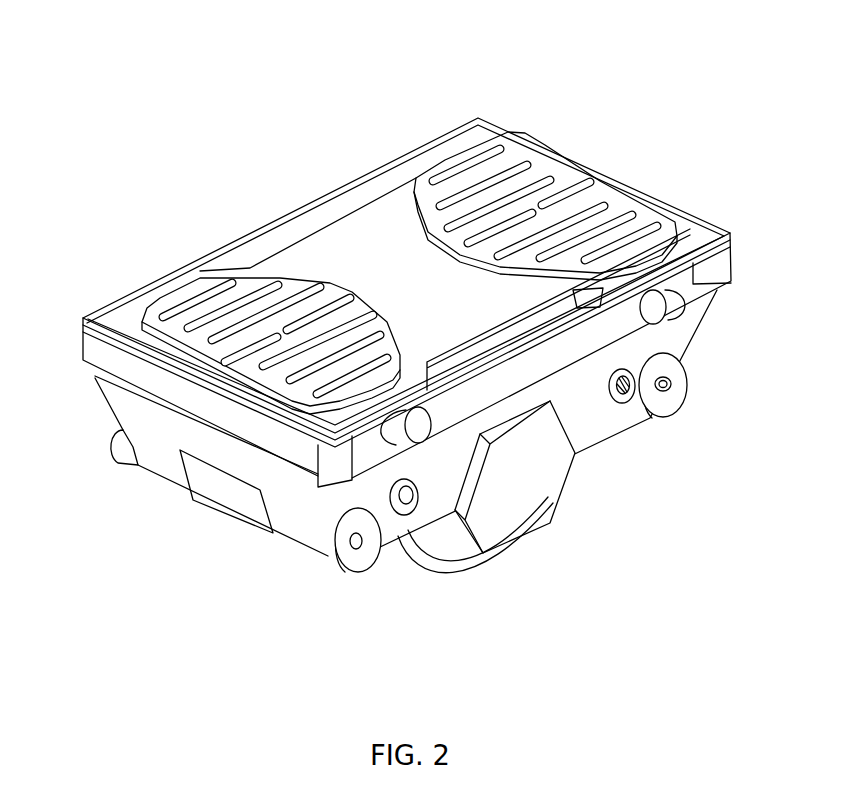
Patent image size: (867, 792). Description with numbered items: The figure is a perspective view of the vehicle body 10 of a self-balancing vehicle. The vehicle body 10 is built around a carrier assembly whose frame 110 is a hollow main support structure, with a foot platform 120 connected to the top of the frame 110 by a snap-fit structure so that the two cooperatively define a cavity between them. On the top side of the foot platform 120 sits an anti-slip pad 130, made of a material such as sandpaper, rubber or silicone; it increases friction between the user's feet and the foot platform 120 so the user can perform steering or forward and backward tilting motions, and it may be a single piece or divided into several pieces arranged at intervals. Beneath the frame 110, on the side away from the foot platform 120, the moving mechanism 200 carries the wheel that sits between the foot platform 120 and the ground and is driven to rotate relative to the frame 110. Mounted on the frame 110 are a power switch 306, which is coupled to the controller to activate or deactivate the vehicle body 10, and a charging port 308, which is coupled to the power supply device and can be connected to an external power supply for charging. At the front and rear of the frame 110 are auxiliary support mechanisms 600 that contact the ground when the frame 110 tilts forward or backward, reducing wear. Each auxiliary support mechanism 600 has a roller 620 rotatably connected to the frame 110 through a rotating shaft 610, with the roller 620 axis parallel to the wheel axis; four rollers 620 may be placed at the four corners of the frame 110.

The vehicle body 10 is at (132, 158).
The frame 110 is at (152, 450).
The foot platform 120 is at (380, 235).
The anti-slip pad 130 is at (565, 172).
The moving mechanism 200 is at (470, 578).
The power switch 306 is at (405, 515).
The charging port 308 is at (623, 404).
The auxiliary support mechanism 600 is at (340, 567).
The rotating shaft 610 is at (668, 387).
The roller 620 is at (672, 410).